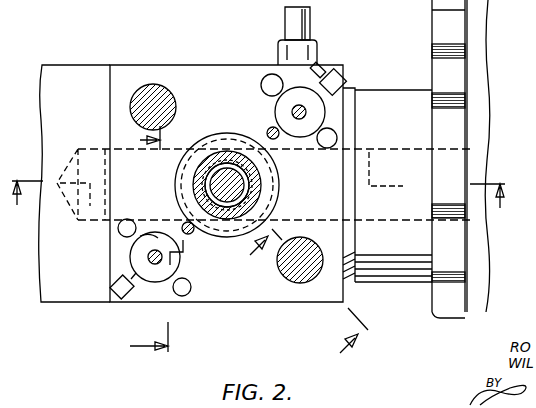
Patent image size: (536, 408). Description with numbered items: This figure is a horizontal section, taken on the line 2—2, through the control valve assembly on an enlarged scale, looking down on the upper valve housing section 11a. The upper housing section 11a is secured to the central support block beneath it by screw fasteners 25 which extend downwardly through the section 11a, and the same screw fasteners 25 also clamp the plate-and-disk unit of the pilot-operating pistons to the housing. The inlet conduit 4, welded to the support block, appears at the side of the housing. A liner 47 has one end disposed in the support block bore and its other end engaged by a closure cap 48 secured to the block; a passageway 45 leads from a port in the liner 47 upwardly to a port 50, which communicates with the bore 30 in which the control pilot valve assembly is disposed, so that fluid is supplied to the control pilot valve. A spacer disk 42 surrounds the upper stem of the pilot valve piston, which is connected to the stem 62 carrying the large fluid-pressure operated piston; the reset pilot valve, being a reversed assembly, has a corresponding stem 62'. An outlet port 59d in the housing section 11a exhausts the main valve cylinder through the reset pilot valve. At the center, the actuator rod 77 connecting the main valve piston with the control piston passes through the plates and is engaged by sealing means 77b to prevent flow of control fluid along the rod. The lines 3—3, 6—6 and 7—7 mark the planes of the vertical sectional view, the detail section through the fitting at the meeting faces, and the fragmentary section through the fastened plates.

The upper valve housing section 11a is at (210, 66).
The closure cap 48 is at (65, 67).
The liner 47 is at (100, 140).
The screw fasteners 25 is at (152, 95).
The actuator rod 77 is at (228, 165).
The sealing means 77b is at (250, 185).
The outlet port 59d is at (368, 73).
The stem 62' is at (316, 135).
The stem 62 is at (114, 260).
The bore 30 is at (148, 233).
The passageway 45 is at (196, 233).
The port 50 is at (186, 264).
The spacer disk 42 is at (140, 293).
The inlet conduit 4 is at (472, 149).
The section line 3— 3 is at (258, 214).
The section line 6— 6 is at (158, 242).
The section line 7— 7 is at (309, 301).
The section line 2— 2 is at (529, 130).